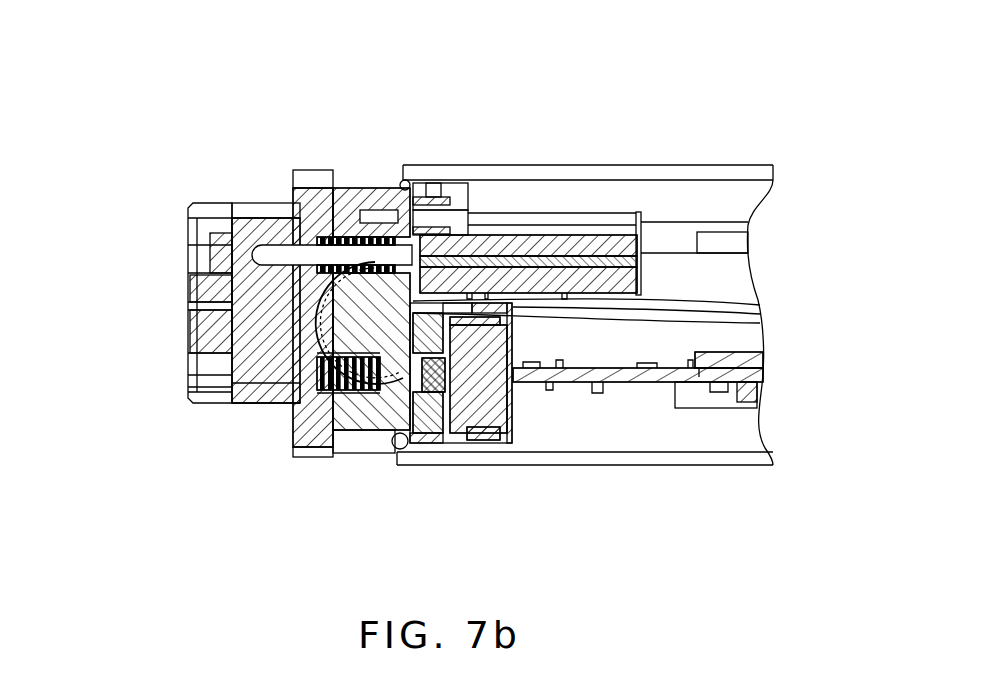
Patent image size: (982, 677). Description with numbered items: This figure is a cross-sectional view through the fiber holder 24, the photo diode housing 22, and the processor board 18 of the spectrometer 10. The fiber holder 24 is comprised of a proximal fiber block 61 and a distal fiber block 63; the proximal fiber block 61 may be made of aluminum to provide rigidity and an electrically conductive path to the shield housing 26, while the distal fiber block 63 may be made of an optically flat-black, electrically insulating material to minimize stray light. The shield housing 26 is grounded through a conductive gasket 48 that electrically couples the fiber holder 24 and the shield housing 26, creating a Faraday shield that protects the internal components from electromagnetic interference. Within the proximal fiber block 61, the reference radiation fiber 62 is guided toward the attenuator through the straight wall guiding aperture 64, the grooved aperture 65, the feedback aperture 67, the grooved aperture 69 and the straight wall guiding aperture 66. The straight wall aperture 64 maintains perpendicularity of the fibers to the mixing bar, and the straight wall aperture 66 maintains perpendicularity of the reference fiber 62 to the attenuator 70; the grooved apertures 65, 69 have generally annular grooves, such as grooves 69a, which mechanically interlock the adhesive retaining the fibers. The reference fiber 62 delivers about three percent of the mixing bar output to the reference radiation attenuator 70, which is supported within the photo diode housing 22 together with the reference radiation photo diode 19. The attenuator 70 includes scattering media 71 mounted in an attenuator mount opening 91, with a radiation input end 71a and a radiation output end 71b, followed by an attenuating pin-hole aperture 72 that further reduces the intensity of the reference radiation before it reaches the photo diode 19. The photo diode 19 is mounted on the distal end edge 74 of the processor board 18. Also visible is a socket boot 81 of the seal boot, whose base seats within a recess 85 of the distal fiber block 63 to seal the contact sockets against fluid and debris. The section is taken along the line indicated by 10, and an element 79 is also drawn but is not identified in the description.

The spectrometer 10 is at (403, 165).
The processor board 18 is at (650, 383).
The reference radiation photo diode 19 is at (480, 420).
The photo diode housing 22 is at (405, 470).
The fiber holder 24 is at (263, 153).
The shield housing 26 is at (650, 166).
The conductive gasket 48 is at (420, 180).
The proximal fiber block 61 is at (345, 215).
The reference radiation fiber 62 is at (345, 305).
The distal fiber block 63 is at (262, 222).
The straight wall guiding aperture 64 is at (408, 262).
The grooved aperture 65 is at (355, 237).
The straight wall guiding aperture 66 is at (388, 380).
The feedback aperture 67 is at (300, 383).
The grooved aperture 69 is at (378, 398).
The annular grooves 69a is at (323, 392).
The reference radiation attenuator 70 is at (427, 411).
The scattering media 71 is at (422, 420).
The radiation input end 71a is at (405, 385).
The radiation output end 71b is at (447, 378).
The attenuating pin-hole aperture 72 is at (503, 420).
The distal end edge 74 is at (533, 420).
The inner tube 79 is at (735, 302).
The socket boot 81 is at (740, 315).
The recess 85 is at (213, 280).
The attenuator mount opening 91 is at (440, 363).